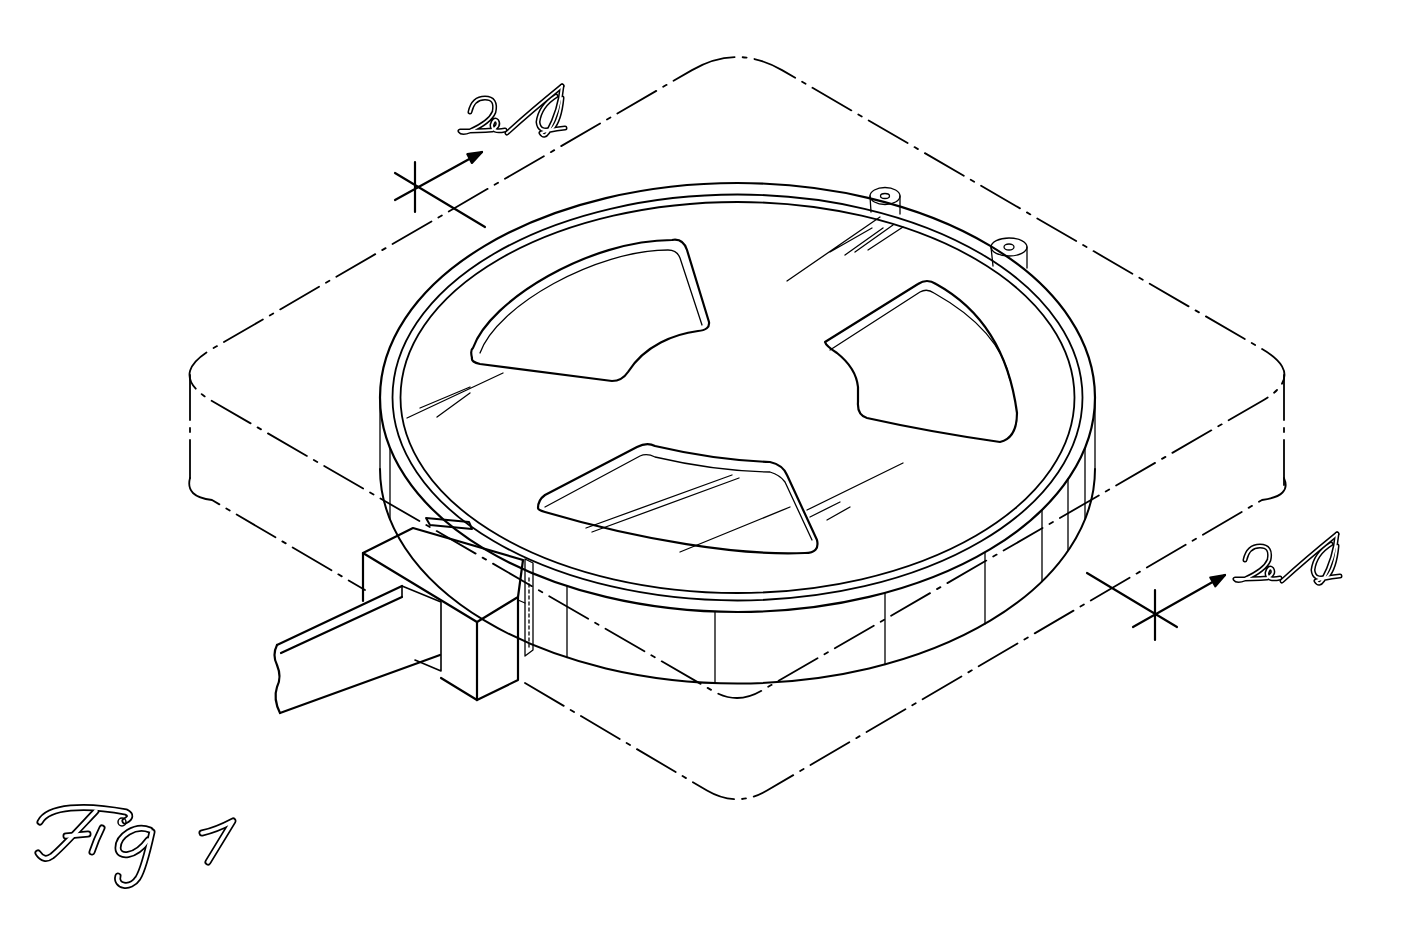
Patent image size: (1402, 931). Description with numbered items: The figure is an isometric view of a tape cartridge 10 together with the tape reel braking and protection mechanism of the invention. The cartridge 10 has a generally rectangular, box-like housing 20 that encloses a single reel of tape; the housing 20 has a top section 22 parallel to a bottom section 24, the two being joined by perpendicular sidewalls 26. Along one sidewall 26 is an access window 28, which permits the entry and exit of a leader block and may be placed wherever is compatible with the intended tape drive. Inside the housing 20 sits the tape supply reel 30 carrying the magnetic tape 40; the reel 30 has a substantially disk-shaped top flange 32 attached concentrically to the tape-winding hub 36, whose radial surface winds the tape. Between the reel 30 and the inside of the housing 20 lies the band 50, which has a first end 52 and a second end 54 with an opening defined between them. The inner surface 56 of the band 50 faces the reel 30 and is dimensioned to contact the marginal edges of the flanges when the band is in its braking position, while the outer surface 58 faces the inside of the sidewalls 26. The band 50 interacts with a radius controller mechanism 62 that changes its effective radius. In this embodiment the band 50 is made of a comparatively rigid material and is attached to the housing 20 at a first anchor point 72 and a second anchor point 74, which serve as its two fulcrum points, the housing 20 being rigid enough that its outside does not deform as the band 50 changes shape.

The cartridge 10 is at (1190, 100).
The housing 20 is at (1253, 307).
The top section 22 is at (1190, 330).
The bottom section 24 is at (897, 717).
The sidewalls 26 is at (240, 482).
The access window 28 is at (519, 675).
The tape supply reel 30 is at (722, 210).
The top flange 32 is at (797, 212).
The tape-winding hub 36 is at (665, 490).
The magnetic tape 40 is at (357, 662).
The band 50 is at (937, 617).
The first end 52 is at (438, 518).
The second end 54 is at (523, 560).
The inner surface 56 is at (1017, 510).
The outer surface 58 is at (1095, 345).
The radius controller mechanism 62 is at (462, 678).
The first anchor point 72 is at (1017, 233).
The second anchor point 74 is at (890, 188).